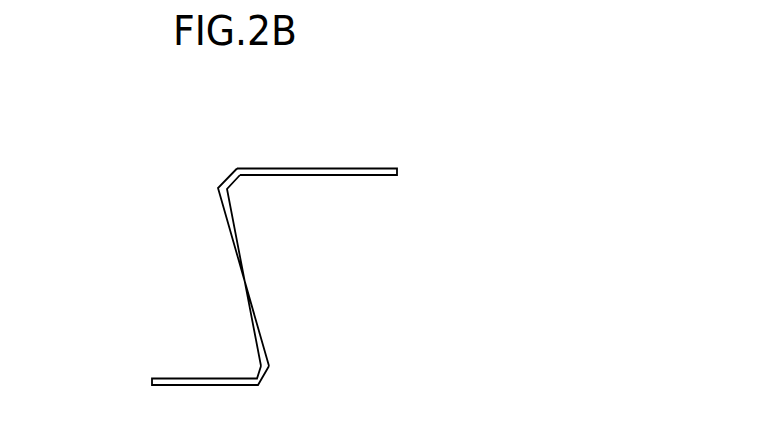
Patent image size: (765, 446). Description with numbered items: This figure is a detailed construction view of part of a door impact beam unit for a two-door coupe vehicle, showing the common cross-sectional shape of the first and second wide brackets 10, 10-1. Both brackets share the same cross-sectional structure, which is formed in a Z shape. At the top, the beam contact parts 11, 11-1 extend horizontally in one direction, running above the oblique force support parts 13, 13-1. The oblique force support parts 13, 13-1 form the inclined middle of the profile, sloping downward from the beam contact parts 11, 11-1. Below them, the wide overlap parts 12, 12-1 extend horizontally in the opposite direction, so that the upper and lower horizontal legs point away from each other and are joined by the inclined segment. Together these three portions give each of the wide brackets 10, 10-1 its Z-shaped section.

The first wide bracket 10 is at (240, 228).
The second wide bracket 10-1 is at (180, 198).
The beam contact part 11 is at (327, 123).
The beam contact part 11-1 is at (328, 172).
The wide overlap part 12 is at (171, 339).
The wide overlap part 12-1 is at (192, 382).
The oblique force support part 13 is at (328, 268).
The oblique force support part 13-1 is at (253, 293).